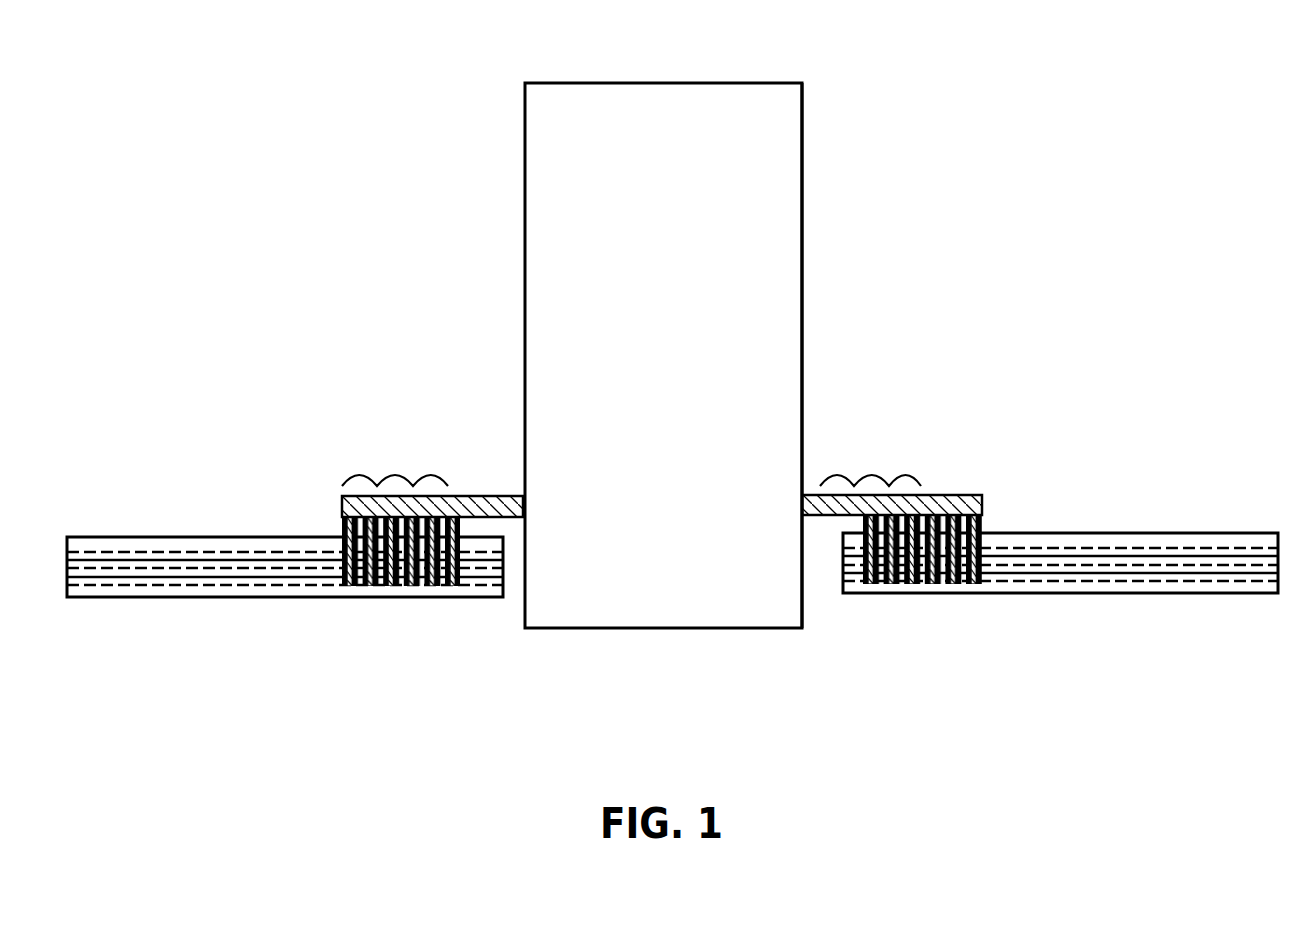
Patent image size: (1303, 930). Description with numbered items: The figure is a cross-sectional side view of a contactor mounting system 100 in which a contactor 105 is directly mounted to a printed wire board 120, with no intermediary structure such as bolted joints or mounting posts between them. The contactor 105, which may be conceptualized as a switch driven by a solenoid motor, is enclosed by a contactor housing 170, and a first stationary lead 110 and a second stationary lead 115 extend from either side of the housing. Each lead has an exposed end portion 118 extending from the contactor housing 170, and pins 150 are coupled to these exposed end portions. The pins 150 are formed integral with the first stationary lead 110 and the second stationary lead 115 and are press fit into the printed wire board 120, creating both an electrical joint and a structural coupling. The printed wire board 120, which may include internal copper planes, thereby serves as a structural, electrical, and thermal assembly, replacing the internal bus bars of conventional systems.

The contactor mounting system 100 is at (864, 338).
The contactor 105 is at (655, 115).
The first stationary lead 110 is at (471, 494).
The second stationary lead 115 is at (956, 493).
The exposed end portion 118 is at (378, 483).
The printed wire board 120 is at (1237, 560).
The pins 150 is at (420, 582).
The contactor housing 170 is at (802, 186).